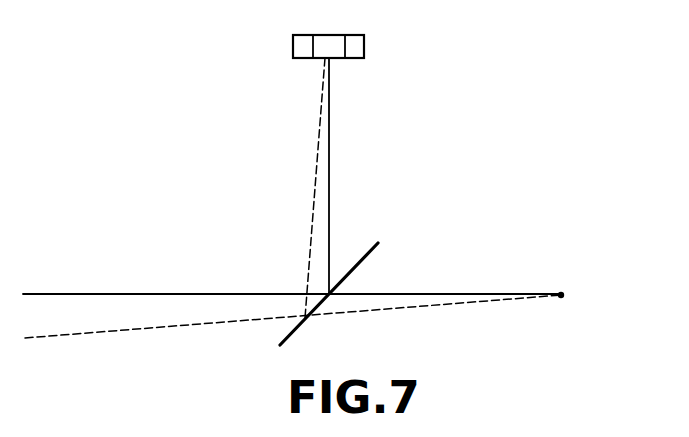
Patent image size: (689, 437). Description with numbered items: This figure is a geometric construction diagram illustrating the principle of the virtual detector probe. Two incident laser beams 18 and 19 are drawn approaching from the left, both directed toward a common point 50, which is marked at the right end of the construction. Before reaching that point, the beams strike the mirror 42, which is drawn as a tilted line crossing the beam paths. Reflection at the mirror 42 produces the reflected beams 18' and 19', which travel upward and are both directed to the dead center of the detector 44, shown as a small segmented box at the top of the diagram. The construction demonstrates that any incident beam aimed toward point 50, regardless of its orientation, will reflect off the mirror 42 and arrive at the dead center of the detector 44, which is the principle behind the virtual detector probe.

The incident laser beam 18 is at (292, 276).
The reflected beam 18' is at (360, 176).
The incident laser beam 19 is at (293, 331).
The reflected beam 19' is at (294, 188).
The mirror 42 is at (370, 255).
The detector 44 is at (362, 35).
The point 50 is at (563, 292).